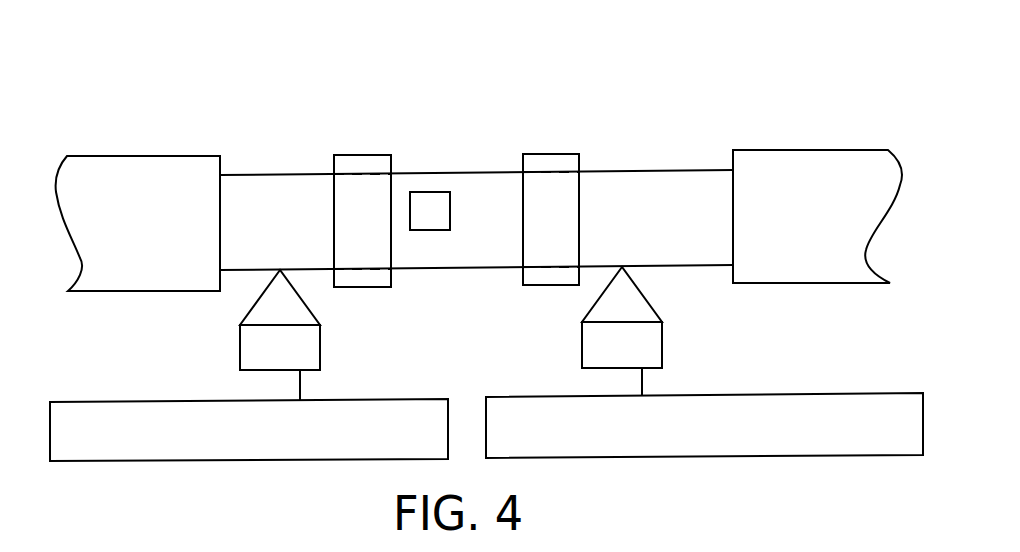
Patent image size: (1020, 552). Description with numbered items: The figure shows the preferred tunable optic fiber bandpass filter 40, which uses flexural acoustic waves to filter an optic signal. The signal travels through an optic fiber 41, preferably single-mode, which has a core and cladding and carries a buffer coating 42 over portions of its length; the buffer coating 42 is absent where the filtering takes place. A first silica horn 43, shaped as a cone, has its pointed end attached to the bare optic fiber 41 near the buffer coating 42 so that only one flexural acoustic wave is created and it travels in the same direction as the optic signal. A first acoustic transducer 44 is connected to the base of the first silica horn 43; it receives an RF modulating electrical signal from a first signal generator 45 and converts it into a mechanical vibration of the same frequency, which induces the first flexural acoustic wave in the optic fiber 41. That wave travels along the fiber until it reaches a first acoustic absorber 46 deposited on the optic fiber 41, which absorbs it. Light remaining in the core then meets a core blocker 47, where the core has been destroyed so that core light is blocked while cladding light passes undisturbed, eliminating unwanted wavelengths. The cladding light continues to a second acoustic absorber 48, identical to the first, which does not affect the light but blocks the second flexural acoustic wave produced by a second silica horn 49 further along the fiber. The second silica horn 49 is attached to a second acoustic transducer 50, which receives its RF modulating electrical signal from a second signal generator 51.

The bandpass filter 40 is at (646, 60).
The optic fiber 41 is at (279, 174).
The buffer coating 42 is at (145, 156).
The first silica horn 43 is at (258, 308).
The first acoustic transducer 44 is at (240, 363).
The first signal generator 45 is at (372, 400).
The first acoustic absorber 46 is at (371, 155).
The core blocker 47 is at (450, 210).
The second acoustic absorber 48 is at (543, 154).
The second silica horn 49 is at (600, 303).
The second acoustic transducer 50 is at (582, 360).
The second signal generator 51 is at (775, 395).